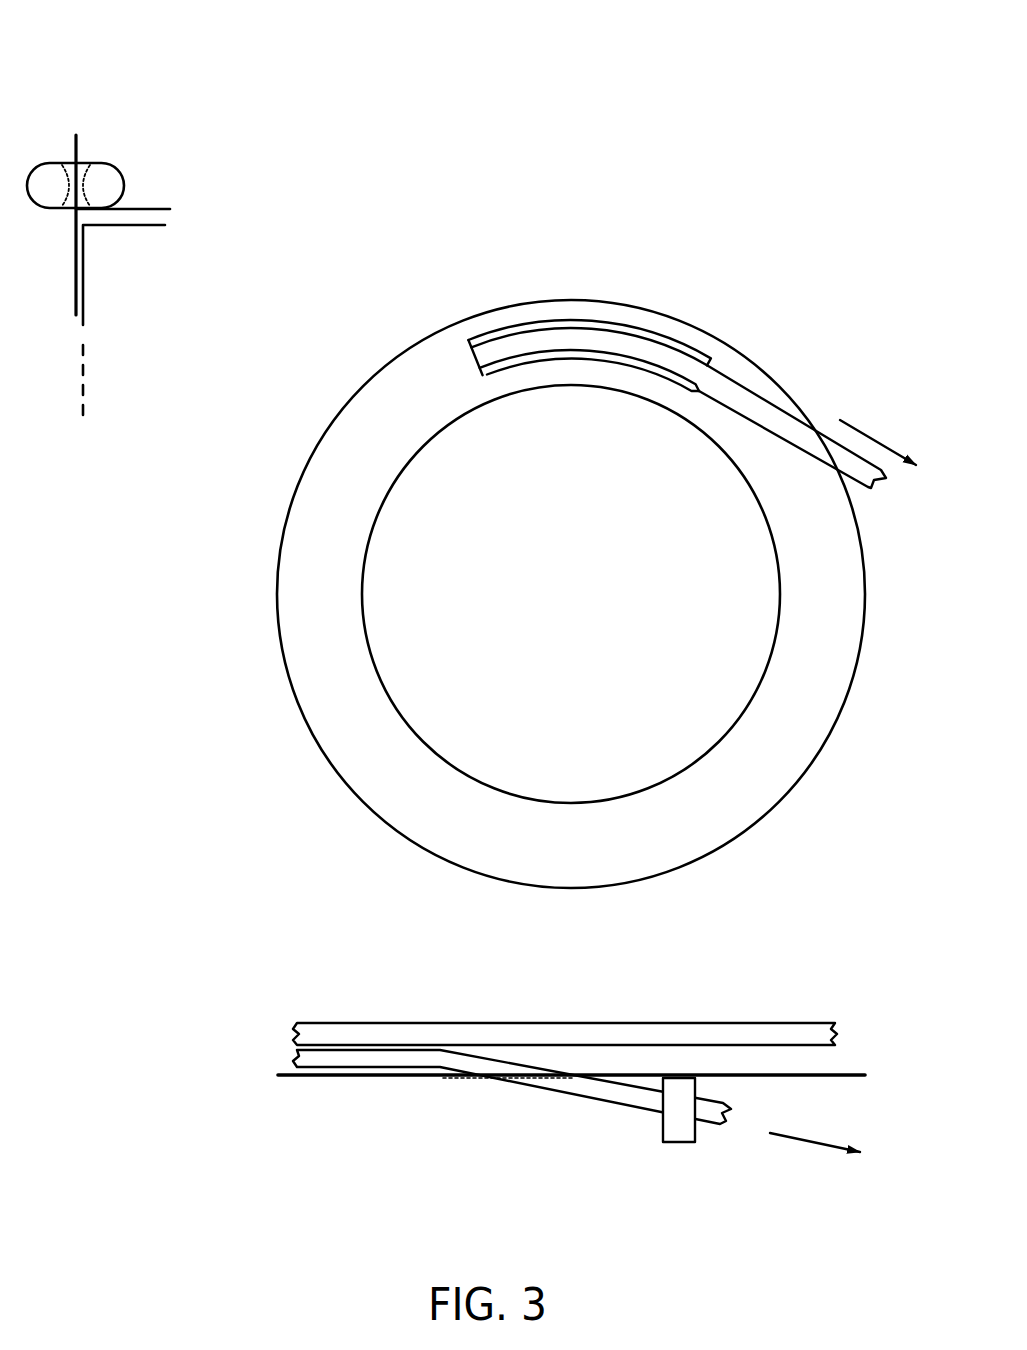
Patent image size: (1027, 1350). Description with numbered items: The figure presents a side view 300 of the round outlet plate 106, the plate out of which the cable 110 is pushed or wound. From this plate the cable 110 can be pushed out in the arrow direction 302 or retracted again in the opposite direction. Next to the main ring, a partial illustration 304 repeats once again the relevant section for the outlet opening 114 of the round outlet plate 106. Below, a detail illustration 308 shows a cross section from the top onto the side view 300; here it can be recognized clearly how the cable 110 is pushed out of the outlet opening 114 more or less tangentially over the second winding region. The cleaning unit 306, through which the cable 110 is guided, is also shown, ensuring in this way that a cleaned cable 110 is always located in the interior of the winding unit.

The side view 300 is at (604, 497).
The cable 110 is at (775, 421).
The arrow direction 302 is at (852, 419).
The partial illustration 304 is at (120, 113).
The detail illustration 308 is at (469, 1027).
The round outlet plate 106 is at (729, 1037).
The outlet opening 114 is at (459, 1097).
The cleaning unit 306 is at (652, 1127).